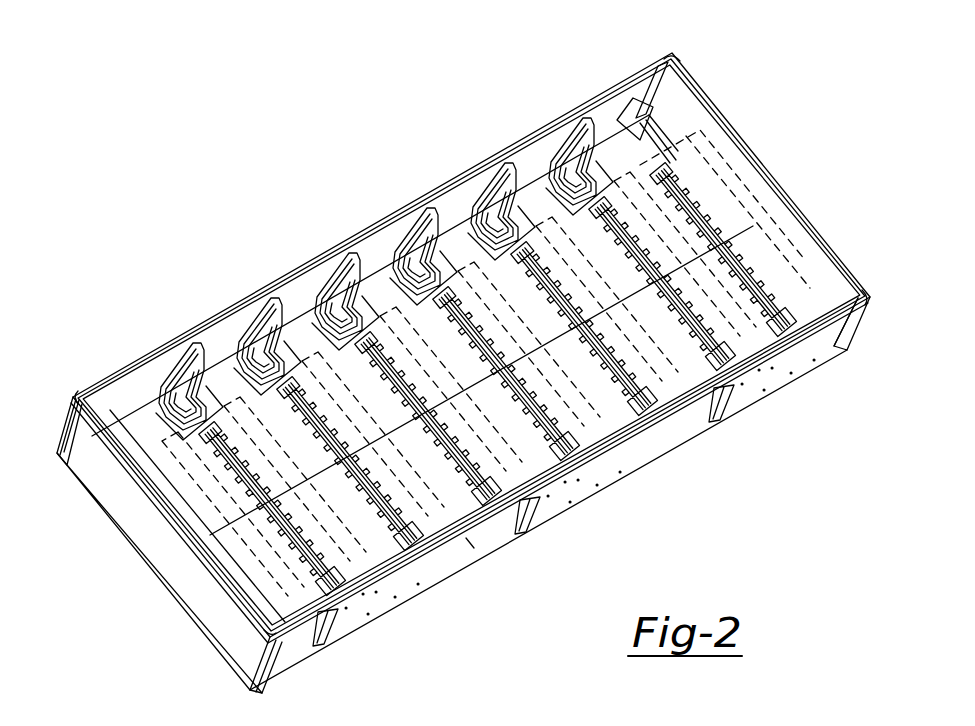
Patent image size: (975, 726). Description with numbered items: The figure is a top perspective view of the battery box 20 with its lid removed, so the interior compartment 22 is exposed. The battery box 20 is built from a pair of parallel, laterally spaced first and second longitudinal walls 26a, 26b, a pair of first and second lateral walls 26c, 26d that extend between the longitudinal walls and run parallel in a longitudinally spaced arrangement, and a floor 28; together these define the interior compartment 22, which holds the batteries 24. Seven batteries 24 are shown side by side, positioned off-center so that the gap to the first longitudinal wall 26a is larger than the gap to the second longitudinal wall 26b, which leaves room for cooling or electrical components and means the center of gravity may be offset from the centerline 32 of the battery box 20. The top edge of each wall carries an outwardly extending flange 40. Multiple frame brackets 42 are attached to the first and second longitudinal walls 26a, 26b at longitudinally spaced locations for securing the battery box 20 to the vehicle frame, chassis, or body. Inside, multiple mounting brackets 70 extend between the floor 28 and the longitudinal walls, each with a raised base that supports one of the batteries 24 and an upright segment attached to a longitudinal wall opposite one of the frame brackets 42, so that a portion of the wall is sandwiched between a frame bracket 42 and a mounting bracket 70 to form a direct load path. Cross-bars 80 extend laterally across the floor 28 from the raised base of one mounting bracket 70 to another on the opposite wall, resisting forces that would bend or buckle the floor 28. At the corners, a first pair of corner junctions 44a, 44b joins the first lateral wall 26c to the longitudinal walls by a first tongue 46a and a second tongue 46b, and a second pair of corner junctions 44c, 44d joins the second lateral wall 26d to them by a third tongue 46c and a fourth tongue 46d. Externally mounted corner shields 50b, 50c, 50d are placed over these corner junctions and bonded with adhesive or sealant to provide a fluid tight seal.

The battery box 20 is at (300, 168).
The interior compartment 22 is at (147, 380).
The batteries 24 is at (233, 395).
The first longitudinal wall 26a is at (383, 235).
The second longitudinal wall 26b is at (645, 452).
The first lateral wall 26c is at (673, 98).
The second lateral wall 26d is at (163, 533).
The floor 28 is at (137, 440).
The centerline 32 is at (468, 540).
The outwardly extending flange 40 is at (800, 213).
The frame brackets 42 is at (773, 378).
The corner junction 44a is at (683, 47).
The corner junction 44b is at (880, 297).
The corner junction 44c is at (70, 390).
The corner junction 44d is at (252, 636).
The first tongue 46a is at (666, 85).
The second tongue 46b is at (858, 290).
The third tongue 46c is at (88, 398).
The fourth tongue 46d is at (290, 642).
The corner shield 50b is at (848, 337).
The corner shield 50c is at (70, 434).
The corner shield 50d is at (250, 670).
The mounting brackets 70 is at (270, 315).
The cross-bars 80 is at (660, 262).